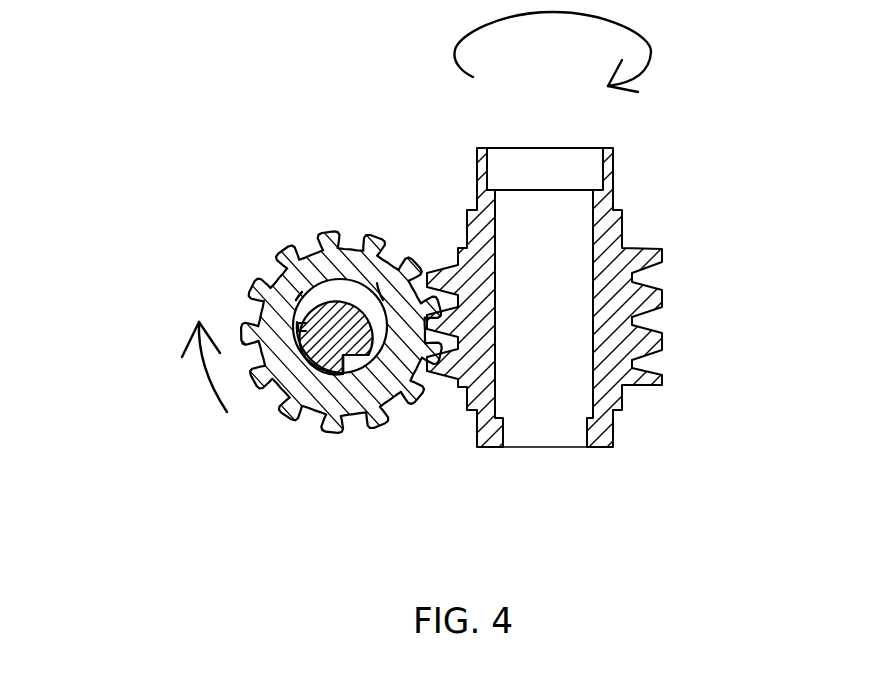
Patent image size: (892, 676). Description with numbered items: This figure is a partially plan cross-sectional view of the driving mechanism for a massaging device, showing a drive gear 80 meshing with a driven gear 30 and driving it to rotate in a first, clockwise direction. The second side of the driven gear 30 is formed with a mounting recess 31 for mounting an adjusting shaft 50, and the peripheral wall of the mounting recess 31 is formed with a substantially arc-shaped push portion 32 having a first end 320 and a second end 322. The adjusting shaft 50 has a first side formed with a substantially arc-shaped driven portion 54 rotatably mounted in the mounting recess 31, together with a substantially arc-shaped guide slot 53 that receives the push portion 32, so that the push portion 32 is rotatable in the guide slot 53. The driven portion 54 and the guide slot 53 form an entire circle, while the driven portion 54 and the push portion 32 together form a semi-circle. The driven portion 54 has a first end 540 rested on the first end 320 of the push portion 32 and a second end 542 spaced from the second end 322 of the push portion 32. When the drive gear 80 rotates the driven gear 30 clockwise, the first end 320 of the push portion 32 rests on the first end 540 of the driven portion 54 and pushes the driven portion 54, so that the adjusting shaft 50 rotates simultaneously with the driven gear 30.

The driven gear 30 is at (277, 242).
The mounting recess 31 is at (313, 307).
The guide slot 53 is at (313, 307).
The push portion 32 is at (377, 300).
The second end 322 is at (383, 292).
The first end 320 is at (360, 372).
The first end 540 is at (360, 372).
The driven portion 54 is at (312, 366).
The second end 542 is at (297, 324).
The adjusting shaft 50 is at (343, 299).
The drive gear 80 is at (660, 337).